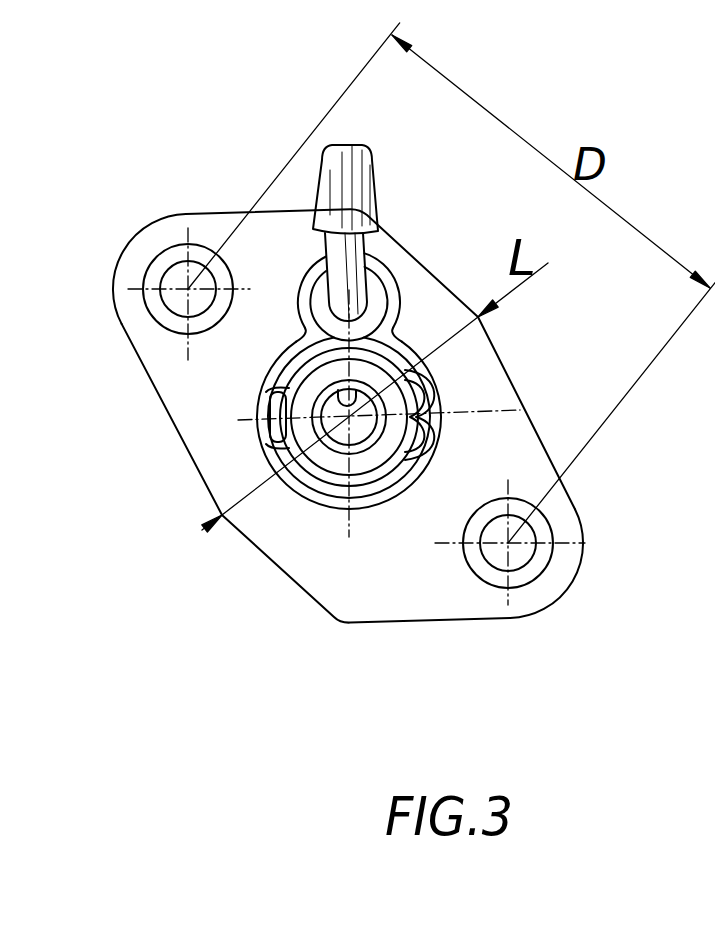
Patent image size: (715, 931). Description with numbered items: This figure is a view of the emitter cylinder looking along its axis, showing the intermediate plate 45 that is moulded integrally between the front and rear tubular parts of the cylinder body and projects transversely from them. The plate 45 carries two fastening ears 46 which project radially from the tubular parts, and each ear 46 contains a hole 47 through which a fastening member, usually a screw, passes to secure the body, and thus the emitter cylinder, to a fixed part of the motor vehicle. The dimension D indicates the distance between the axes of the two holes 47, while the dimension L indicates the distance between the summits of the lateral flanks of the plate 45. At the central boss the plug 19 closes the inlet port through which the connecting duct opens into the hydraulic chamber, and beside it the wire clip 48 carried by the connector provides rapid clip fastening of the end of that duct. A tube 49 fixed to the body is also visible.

The plug 19 is at (320, 460).
The intermediate plate 45 is at (280, 575).
The fastening ears 46 is at (165, 345).
The holes 47 is at (168, 266).
The wire clip 48 is at (430, 443).
The tube 49 is at (360, 247).